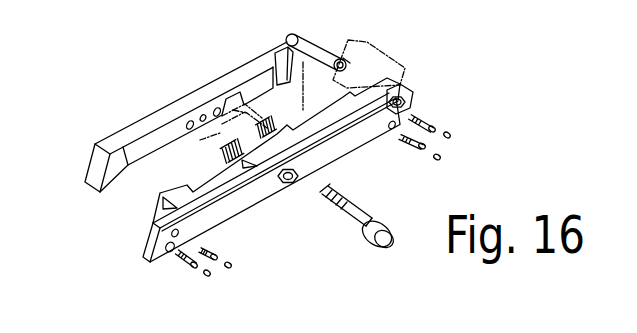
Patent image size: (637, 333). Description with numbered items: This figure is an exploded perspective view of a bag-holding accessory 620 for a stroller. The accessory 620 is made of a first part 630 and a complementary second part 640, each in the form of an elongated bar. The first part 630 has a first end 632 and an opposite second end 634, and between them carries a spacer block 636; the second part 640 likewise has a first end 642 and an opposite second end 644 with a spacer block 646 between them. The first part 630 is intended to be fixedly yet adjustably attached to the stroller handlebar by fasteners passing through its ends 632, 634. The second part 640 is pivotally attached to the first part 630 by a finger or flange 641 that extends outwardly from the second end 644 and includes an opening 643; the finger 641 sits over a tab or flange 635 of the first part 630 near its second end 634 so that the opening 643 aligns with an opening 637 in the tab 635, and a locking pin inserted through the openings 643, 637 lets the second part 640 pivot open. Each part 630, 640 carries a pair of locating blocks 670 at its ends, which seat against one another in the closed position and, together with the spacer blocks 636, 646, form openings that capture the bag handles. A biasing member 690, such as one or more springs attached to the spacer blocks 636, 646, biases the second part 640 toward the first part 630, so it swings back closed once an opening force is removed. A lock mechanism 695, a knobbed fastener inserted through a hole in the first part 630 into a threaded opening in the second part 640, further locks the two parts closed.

The accessory 620 is at (214, 127).
The first part 630 is at (326, 165).
The first end 632 is at (162, 235).
The second end 634 is at (400, 90).
The tab or flange 635 is at (402, 109).
The spacer block 636 is at (272, 140).
The opening 637 is at (400, 107).
The second part 640 is at (214, 127).
The finger or flange 641 is at (343, 58).
The first end 642 is at (88, 170).
The opening 643 is at (345, 63).
The second end 644 is at (315, 35).
The spacer block 646 is at (222, 82).
The locating blocks 670 is at (299, 72).
The biasing member 690 is at (233, 160).
The lock mechanism 695 is at (354, 234).